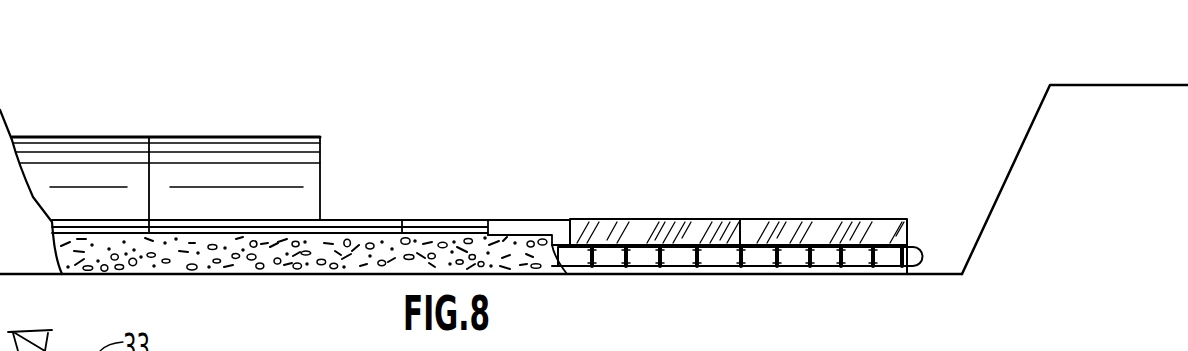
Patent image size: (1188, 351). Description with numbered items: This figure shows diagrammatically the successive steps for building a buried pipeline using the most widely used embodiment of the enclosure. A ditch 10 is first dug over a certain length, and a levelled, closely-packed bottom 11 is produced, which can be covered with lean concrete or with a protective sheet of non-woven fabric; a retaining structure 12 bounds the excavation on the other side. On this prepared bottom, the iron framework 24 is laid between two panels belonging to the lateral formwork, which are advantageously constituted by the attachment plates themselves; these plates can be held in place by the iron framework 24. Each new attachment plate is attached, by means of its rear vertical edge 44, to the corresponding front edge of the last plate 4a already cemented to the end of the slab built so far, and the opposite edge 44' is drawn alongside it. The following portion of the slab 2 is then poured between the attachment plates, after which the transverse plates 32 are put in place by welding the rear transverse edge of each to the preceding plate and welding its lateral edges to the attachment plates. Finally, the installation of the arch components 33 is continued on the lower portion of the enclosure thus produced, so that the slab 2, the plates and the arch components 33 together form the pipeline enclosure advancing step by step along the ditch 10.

The slab 2 is at (422, 250).
The last plate 4a is at (508, 227).
The ditch 10 is at (978, 167).
The bottom 11 is at (923, 277).
The retaining wall 12 is at (0, 93).
The iron framework 24 is at (683, 243).
The transverse plate 32 is at (345, 227).
The arch component 33 is at (243, 137).
The rear vertical edge 44 is at (655, 181).
The insulating panel 44' is at (823, 195).